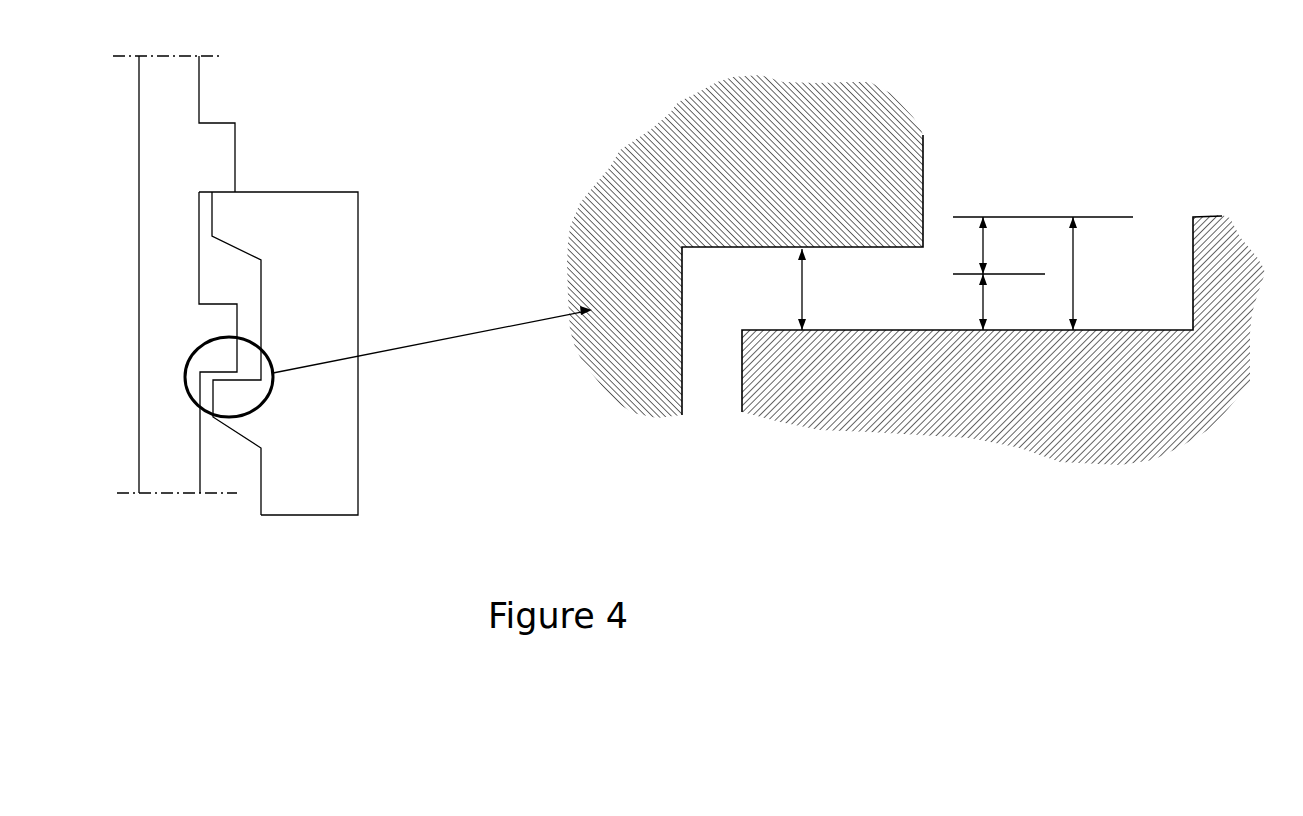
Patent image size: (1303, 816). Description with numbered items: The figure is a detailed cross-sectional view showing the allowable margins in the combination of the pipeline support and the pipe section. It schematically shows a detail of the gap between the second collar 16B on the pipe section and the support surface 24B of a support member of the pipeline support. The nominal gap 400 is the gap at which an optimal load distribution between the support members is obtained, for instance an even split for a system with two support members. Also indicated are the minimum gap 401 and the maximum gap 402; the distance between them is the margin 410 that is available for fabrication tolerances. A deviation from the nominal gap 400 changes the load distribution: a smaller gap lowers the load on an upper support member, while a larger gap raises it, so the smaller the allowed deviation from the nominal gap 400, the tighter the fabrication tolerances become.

The second collar 16B is at (908, 178).
The support surface 24B is at (863, 330).
The nominal gap 400 is at (832, 289).
The minimum gap 401 is at (1013, 302).
The maximum gap 402 is at (1103, 273).
The margin 410 is at (1013, 245).